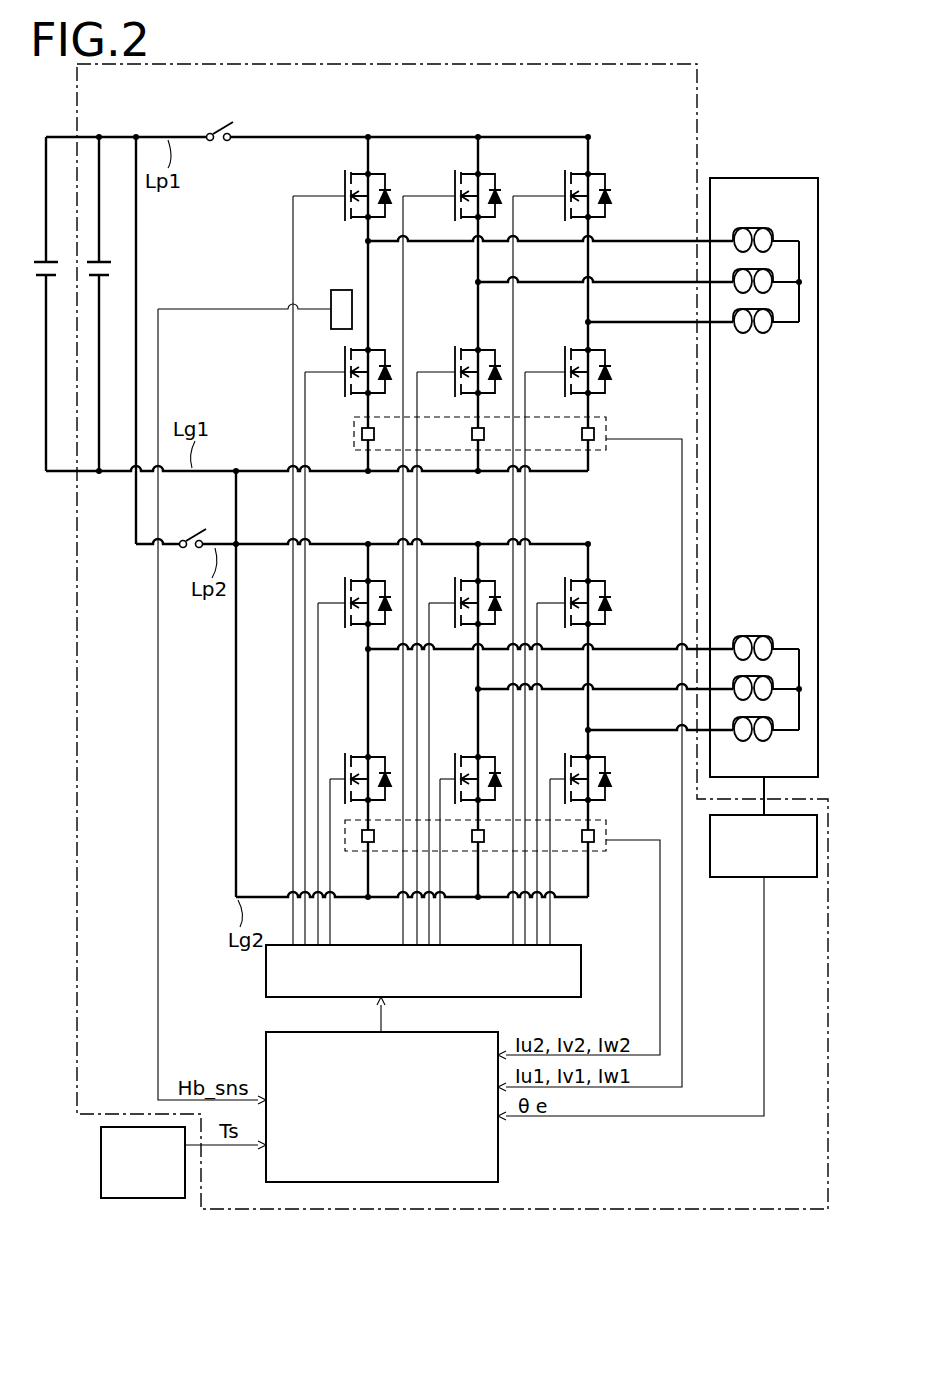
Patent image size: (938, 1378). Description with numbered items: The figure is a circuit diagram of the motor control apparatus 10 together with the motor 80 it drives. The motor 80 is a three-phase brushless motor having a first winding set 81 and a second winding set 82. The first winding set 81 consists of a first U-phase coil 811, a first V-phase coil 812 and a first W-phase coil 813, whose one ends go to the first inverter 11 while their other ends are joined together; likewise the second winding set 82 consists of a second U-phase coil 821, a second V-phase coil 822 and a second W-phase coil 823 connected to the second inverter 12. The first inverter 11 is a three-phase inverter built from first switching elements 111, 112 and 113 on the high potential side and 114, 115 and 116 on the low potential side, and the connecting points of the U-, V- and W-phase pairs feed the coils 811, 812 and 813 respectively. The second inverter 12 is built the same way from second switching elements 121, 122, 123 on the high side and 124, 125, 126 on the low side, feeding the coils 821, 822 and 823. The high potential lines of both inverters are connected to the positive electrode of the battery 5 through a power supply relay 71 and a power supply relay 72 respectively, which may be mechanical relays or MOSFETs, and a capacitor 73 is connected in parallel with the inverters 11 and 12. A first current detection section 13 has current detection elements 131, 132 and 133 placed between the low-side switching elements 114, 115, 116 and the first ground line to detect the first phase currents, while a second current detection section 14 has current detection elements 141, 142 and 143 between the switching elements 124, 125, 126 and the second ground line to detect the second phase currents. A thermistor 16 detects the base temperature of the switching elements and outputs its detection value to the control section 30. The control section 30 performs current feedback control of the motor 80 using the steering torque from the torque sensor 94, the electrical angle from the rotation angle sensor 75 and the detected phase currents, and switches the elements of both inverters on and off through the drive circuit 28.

The battery 5 is at (54, 262).
The capacitor 73 is at (104, 262).
The power supply relay 71 is at (216, 130).
The power supply relay 72 is at (185, 537).
The motor control apparatus 10 is at (700, 94).
The first inverter 11 is at (618, 156).
The second inverter 12 is at (618, 566).
The first current detection section 13 is at (606, 425).
The second current detection section 14 is at (606, 831).
The thermistor 16 is at (340, 290).
The drive circuit 28 is at (266, 972).
The control section 30 is at (498, 1160).
The rotation angle sensor 75 is at (790, 880).
The motor 80 is at (794, 178).
The first winding set 81 is at (760, 371).
The second winding set 82 is at (760, 615).
The torque sensor 94 is at (101, 1144).
The first switching element 111 is at (358, 172).
The first switching element 112 is at (468, 172).
The first switching element 113 is at (578, 172).
The first switching element 114 is at (374, 347).
The first switching element 115 is at (484, 347).
The first switching element 116 is at (594, 347).
The second switching element 121 is at (361, 579).
The second switching element 122 is at (471, 579).
The second switching element 123 is at (581, 579).
The second switching element 124 is at (374, 755).
The second switching element 125 is at (484, 755).
The second switching element 126 is at (594, 755).
The current detection element 131 is at (361, 434).
The current detection element 132 is at (471, 434).
The current detection element 133 is at (581, 434).
The current detection element 141 is at (364, 844).
The current detection element 142 is at (474, 844).
The current detection element 143 is at (584, 844).
The first U-phase coil 811 is at (766, 232).
The first V-phase coil 812 is at (742, 270).
The first W-phase coil 813 is at (751, 333).
The second U-phase coil 821 is at (766, 640).
The second V-phase coil 822 is at (742, 677).
The second W-phase coil 823 is at (751, 741).